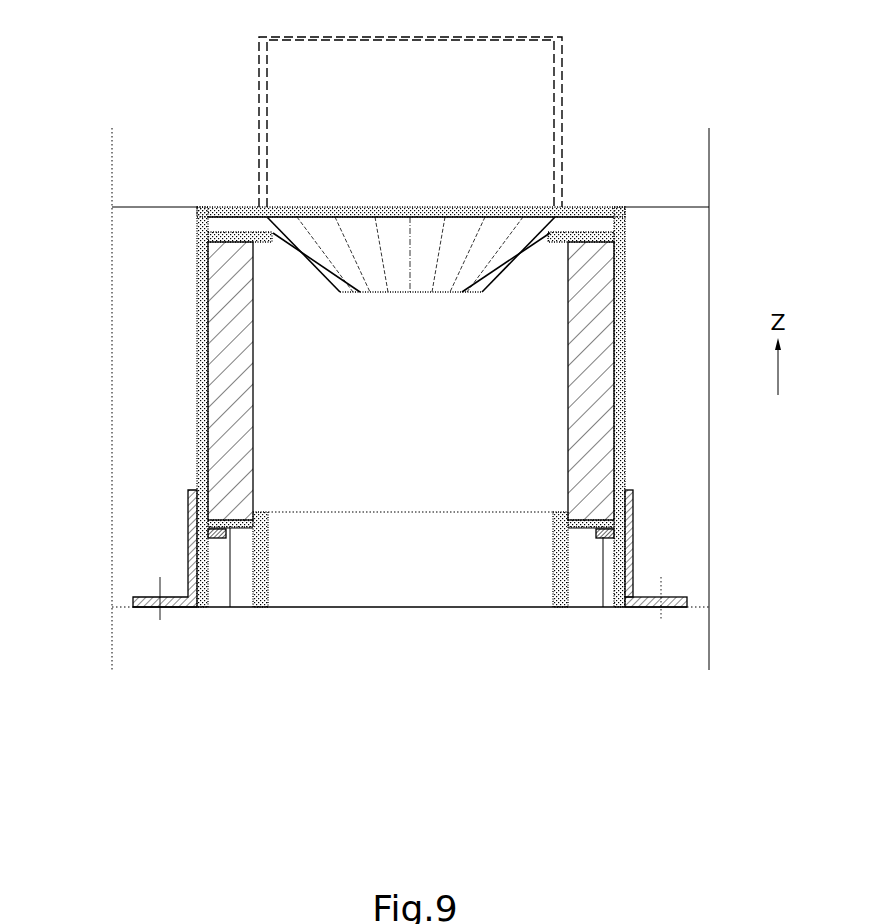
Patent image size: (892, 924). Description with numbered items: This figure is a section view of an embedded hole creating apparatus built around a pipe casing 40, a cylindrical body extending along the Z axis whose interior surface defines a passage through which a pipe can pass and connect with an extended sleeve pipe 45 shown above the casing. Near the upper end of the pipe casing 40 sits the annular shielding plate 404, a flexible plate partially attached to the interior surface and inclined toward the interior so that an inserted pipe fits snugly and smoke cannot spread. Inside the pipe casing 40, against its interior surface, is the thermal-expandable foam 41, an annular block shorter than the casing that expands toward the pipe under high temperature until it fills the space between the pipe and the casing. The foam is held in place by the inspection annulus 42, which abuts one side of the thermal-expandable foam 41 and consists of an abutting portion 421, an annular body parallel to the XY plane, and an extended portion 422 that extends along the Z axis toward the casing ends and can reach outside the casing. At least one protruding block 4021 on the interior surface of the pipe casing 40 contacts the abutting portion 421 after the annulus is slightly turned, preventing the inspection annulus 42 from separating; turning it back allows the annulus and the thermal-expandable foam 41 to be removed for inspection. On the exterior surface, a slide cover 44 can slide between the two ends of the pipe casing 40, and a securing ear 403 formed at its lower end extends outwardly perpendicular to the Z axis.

The pipe casing 40 is at (197, 300).
The thermal-expandable foam 41 is at (228, 382).
The inspection annulus 42 is at (259, 632).
The abutting portion 421 is at (230, 607).
The extended portion 422 is at (268, 558).
The protruding block 4021 is at (603, 538).
The securing ear 403 is at (683, 598).
The annular shielding plate 404 is at (513, 232).
The slide cover 44 is at (627, 547).
The extended sleeve pipe 45 is at (562, 82).